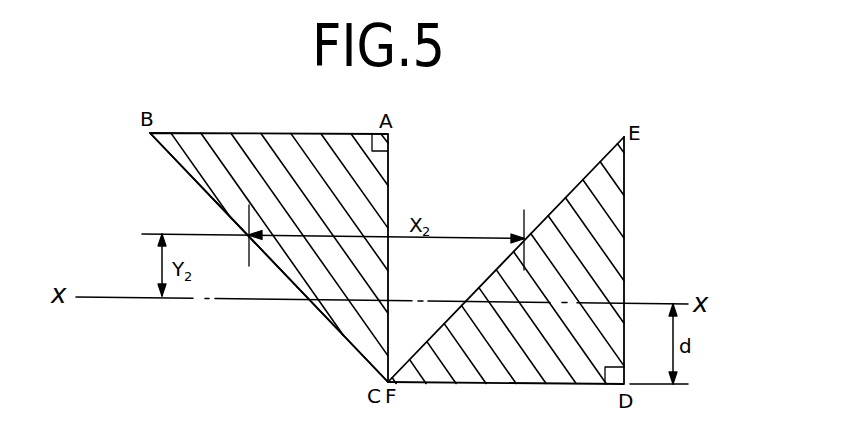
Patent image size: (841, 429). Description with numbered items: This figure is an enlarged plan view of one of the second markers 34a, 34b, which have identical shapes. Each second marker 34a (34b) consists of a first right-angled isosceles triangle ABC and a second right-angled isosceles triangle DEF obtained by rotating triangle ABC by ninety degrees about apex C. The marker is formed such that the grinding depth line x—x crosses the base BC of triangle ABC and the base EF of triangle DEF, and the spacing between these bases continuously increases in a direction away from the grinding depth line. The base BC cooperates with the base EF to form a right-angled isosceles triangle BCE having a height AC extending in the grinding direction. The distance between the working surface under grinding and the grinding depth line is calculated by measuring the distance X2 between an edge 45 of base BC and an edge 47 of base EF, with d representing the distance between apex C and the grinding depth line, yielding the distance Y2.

The second marker 34a is at (213, 257).
The second marker 34b is at (146, 171).
The edge of the base BC 45 is at (332, 326).
The edge of the base EF 47 is at (432, 329).